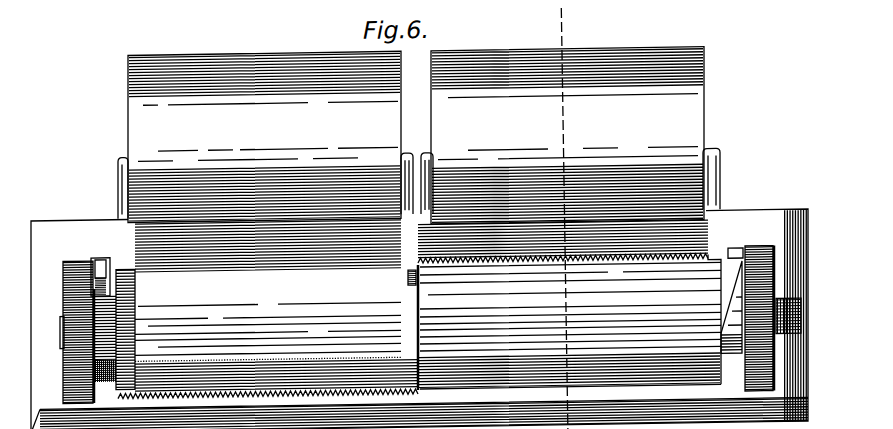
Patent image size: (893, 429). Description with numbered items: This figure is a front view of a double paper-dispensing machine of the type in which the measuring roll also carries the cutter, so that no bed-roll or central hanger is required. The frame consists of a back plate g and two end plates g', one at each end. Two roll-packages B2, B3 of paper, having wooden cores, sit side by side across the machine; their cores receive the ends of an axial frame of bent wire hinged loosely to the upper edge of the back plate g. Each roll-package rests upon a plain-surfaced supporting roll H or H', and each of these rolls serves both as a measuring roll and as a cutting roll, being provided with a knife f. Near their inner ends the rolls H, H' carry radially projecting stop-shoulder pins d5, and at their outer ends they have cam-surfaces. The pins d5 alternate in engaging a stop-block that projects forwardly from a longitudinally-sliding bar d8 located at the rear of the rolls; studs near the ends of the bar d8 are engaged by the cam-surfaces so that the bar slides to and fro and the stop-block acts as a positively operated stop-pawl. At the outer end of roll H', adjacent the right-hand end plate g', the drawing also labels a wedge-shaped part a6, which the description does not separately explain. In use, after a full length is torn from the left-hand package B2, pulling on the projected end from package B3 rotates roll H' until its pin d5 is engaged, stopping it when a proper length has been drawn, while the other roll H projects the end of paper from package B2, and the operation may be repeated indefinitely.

The back plate g is at (419, 319).
The roll-package B2 is at (264, 136).
The roll-package B3 is at (567, 135).
The plain-surfaced roll H is at (268, 322).
The plain-surfaced roll H' is at (569, 304).
The knife f is at (506, 257).
The end plate g' is at (418, 325).
The longitudinally-sliding bar d8 is at (52, 328).
The pin d5 is at (399, 278).
The wedge a6 is at (721, 309).